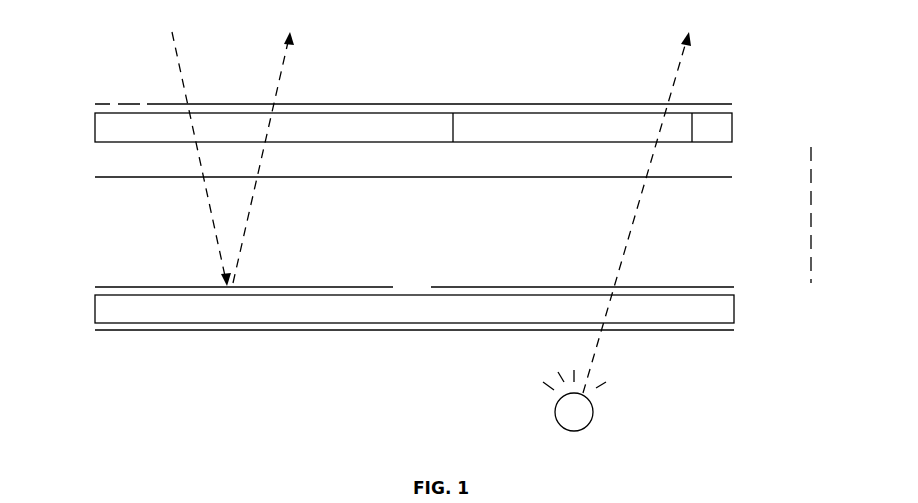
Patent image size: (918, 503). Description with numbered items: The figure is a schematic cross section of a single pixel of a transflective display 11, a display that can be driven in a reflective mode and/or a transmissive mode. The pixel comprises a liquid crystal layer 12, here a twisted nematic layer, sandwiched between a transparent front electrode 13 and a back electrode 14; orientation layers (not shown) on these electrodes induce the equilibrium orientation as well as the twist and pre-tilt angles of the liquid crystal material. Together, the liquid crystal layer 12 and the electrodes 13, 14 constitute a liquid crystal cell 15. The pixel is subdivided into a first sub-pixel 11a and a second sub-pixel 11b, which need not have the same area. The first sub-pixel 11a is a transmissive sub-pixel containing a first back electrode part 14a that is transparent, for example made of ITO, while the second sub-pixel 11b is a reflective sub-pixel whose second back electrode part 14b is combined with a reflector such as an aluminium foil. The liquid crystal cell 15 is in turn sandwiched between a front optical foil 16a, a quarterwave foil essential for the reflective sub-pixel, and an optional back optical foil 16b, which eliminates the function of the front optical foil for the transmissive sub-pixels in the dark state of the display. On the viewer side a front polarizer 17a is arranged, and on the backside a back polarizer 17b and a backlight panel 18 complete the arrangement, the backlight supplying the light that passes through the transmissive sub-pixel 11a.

The display 11 is at (265, 387).
The first sub-pixel 11a is at (573, 213).
The second sub-pixel 11b is at (270, 213).
The liquid crystal layer 12 is at (185, 227).
The transparent front electrode 13 is at (138, 177).
The back electrode 14 is at (103, 288).
The first back electrode part 14a is at (694, 283).
The second back electrode part 14b is at (133, 285).
The liquid crystal cell 15 is at (840, 215).
The front optical foil 16a is at (732, 127).
The back optical foil 16b is at (734, 308).
The front polarizer 17a is at (692, 103).
The back polarizer 17b is at (694, 332).
The backlight panel 18 is at (574, 430).